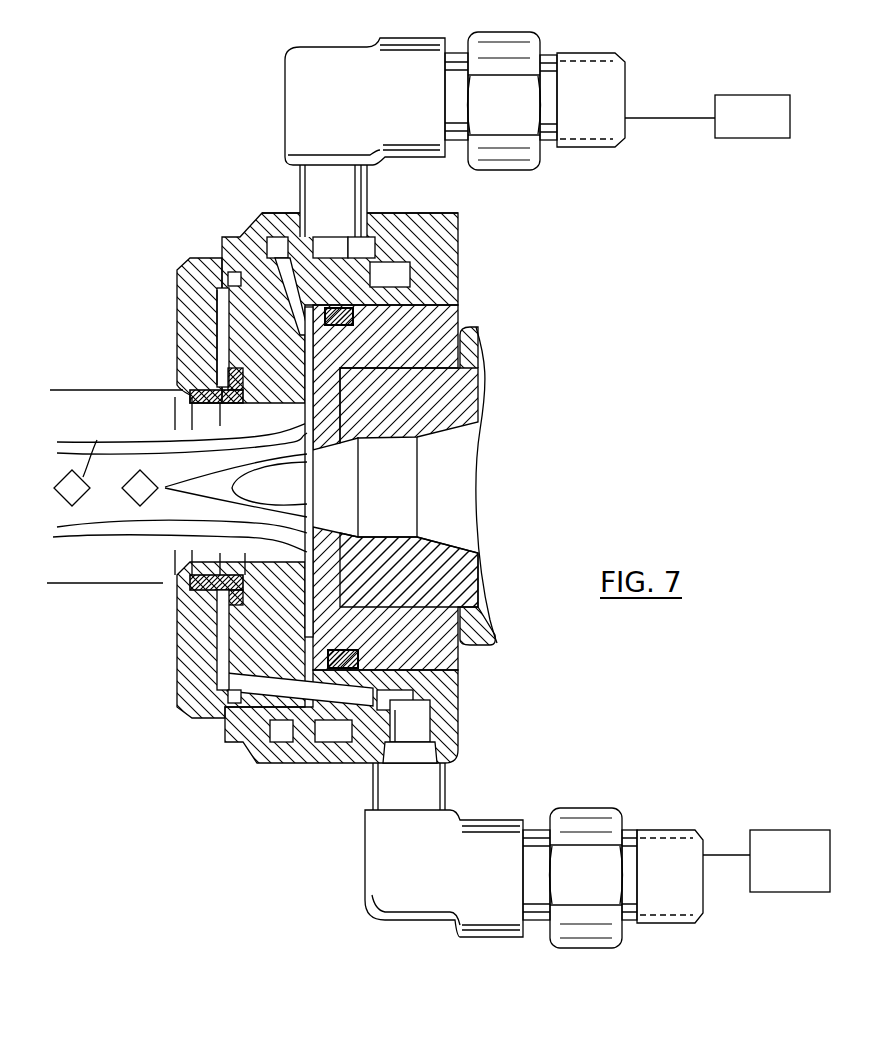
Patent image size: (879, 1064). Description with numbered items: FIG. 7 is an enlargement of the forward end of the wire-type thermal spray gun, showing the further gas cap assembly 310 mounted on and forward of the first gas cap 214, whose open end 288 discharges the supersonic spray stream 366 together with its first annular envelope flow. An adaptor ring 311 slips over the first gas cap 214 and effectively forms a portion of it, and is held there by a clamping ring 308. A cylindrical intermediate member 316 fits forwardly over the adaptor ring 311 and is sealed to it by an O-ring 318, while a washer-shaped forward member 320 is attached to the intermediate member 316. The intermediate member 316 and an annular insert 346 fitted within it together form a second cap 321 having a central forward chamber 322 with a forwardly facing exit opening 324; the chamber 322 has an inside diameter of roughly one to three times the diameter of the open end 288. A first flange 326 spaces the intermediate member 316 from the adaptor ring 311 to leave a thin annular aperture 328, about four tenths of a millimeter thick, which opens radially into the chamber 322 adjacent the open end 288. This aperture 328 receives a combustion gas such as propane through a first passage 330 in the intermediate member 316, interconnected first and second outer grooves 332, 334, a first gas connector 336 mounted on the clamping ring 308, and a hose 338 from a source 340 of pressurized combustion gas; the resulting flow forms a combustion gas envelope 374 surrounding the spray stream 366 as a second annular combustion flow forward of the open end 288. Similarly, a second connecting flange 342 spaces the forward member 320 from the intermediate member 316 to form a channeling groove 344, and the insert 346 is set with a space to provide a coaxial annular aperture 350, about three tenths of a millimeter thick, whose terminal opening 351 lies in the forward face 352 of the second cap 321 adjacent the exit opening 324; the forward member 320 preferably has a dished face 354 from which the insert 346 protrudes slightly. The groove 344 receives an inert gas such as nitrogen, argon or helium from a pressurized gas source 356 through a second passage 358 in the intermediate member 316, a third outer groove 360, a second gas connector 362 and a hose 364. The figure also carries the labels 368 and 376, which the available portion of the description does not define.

The gas cap 214 is at (473, 390).
The open end 288 is at (310, 465).
The clamping ring 308 is at (398, 213).
The gas cap assembly 310 is at (172, 148).
The adaptor ring 311 is at (460, 660).
The intermediate member 316 is at (223, 727).
The O-ring 318 is at (457, 284).
The forward member 320 is at (178, 295).
The second cap 321 is at (238, 228).
The central forward chamber 322 is at (245, 438).
The exit opening 324 is at (176, 563).
The first flange 326 is at (325, 328).
The annular aperture 328 is at (300, 419).
The first passage 330 is at (295, 325).
The first outer groove 332 is at (286, 242).
The second outer groove 334 is at (333, 247).
The first gas connector 336 is at (282, 100).
The hose 338 is at (669, 118).
The source of pressurized combustion gas 340 is at (770, 129).
The second connecting flange 342 is at (230, 280).
The channeling groove 344 is at (222, 330).
The annular insert 346 is at (205, 391).
The annular aperture 350 is at (182, 613).
The terminal opening 351 is at (170, 592).
The forward face 352 is at (177, 352).
The dished face 354 is at (177, 655).
The pressurized gas source 356 is at (808, 872).
The second passage 358 is at (267, 677).
The third outer groove 360 is at (407, 708).
The second gas connector 362 is at (363, 870).
The hose 364 is at (730, 855).
The supersonic spray stream 366 is at (120, 510).
The particles 368 is at (118, 466).
The combustion gas envelope 374 is at (205, 521).
The inlet conduit 376 is at (97, 580).